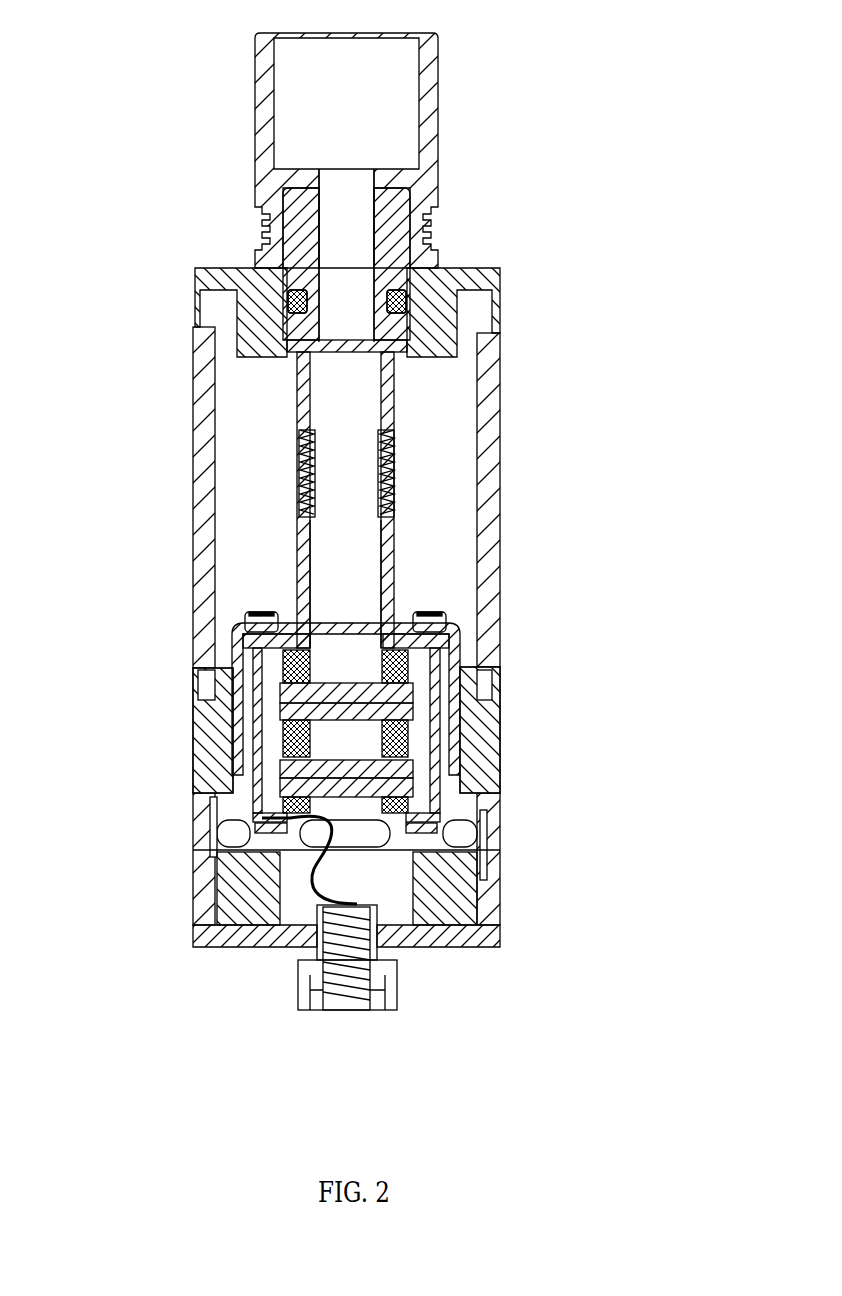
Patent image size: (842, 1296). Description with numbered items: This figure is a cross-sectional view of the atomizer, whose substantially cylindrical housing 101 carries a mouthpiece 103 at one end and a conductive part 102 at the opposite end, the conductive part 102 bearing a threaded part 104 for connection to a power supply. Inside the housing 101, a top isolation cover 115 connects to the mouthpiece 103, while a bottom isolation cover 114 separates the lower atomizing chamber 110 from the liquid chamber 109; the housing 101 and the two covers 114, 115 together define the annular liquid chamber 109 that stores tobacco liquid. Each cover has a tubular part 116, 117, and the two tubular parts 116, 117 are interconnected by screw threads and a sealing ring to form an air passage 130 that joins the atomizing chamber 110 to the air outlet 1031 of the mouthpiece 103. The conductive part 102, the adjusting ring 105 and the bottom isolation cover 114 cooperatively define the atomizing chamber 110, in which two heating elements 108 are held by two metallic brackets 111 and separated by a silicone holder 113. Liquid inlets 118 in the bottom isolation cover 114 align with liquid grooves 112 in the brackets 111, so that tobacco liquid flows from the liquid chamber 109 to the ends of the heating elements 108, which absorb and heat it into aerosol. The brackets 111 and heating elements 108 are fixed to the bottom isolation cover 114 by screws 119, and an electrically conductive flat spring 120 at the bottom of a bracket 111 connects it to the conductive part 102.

The housing 101 is at (500, 457).
The conductive part 102 is at (410, 940).
The mouthpiece 103 is at (437, 120).
The air outlet 1031 is at (342, 187).
The threaded part 104 is at (300, 987).
The adjusting ring 105 is at (490, 837).
The heating element 108 is at (225, 767).
The liquid chamber 109 is at (253, 428).
The atomizing chamber 110 is at (453, 742).
The metallic bracket 111 is at (240, 653).
The liquid groove 112 is at (270, 698).
The silicone holder 113 is at (277, 747).
The bottom isolation cover 114 is at (457, 647).
The top isolation cover 115 is at (430, 348).
The tubular part 116 is at (393, 402).
The tubular part 117 is at (390, 543).
The liquid inlet 118 is at (268, 613).
The screw 119 is at (443, 607).
The electrically conductive flat spring 120 is at (277, 890).
The air passage 130 is at (340, 478).